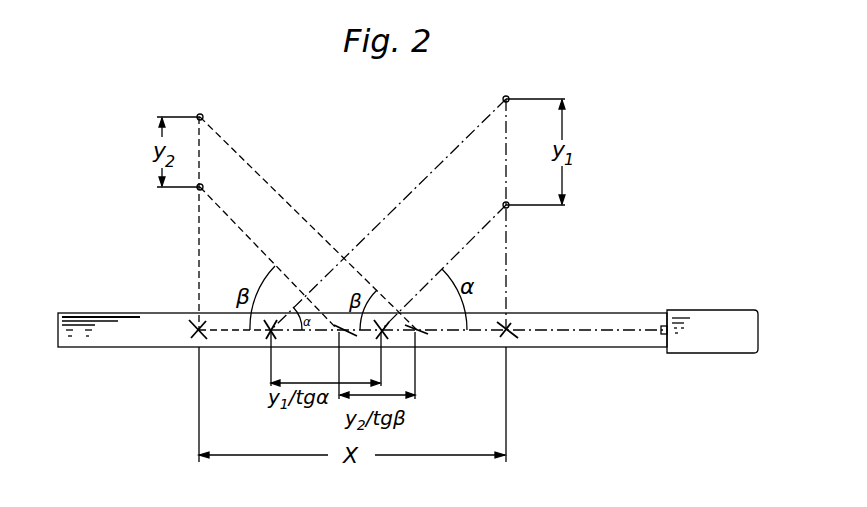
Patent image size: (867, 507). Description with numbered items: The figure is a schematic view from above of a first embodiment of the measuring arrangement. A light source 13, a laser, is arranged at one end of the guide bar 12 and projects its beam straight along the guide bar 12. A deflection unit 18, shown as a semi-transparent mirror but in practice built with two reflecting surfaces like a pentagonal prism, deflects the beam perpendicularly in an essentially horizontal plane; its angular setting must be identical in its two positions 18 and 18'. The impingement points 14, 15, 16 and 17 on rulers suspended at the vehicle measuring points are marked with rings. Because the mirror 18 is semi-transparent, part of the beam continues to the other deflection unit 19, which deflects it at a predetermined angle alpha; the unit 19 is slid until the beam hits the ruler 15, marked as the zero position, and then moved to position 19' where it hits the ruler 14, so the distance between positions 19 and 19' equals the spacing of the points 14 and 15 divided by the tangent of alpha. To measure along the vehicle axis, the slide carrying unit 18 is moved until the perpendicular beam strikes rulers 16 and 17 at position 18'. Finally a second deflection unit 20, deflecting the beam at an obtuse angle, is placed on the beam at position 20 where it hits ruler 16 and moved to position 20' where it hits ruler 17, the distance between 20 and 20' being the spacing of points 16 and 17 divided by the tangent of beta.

The guide bar 12 is at (117, 340).
The light source 13 is at (705, 322).
The impingement point 14 is at (509, 96).
The impingement point 15 is at (509, 208).
The impingement point 16 is at (203, 114).
The impingement point 17 is at (198, 190).
The deflection unit 18 is at (529, 350).
The deflection unit position 18' is at (180, 350).
The deflection unit 19 is at (395, 351).
The deflection unit position 19' is at (248, 351).
The second deflection unit 20 is at (438, 353).
The deflection unit position 20' is at (326, 353).